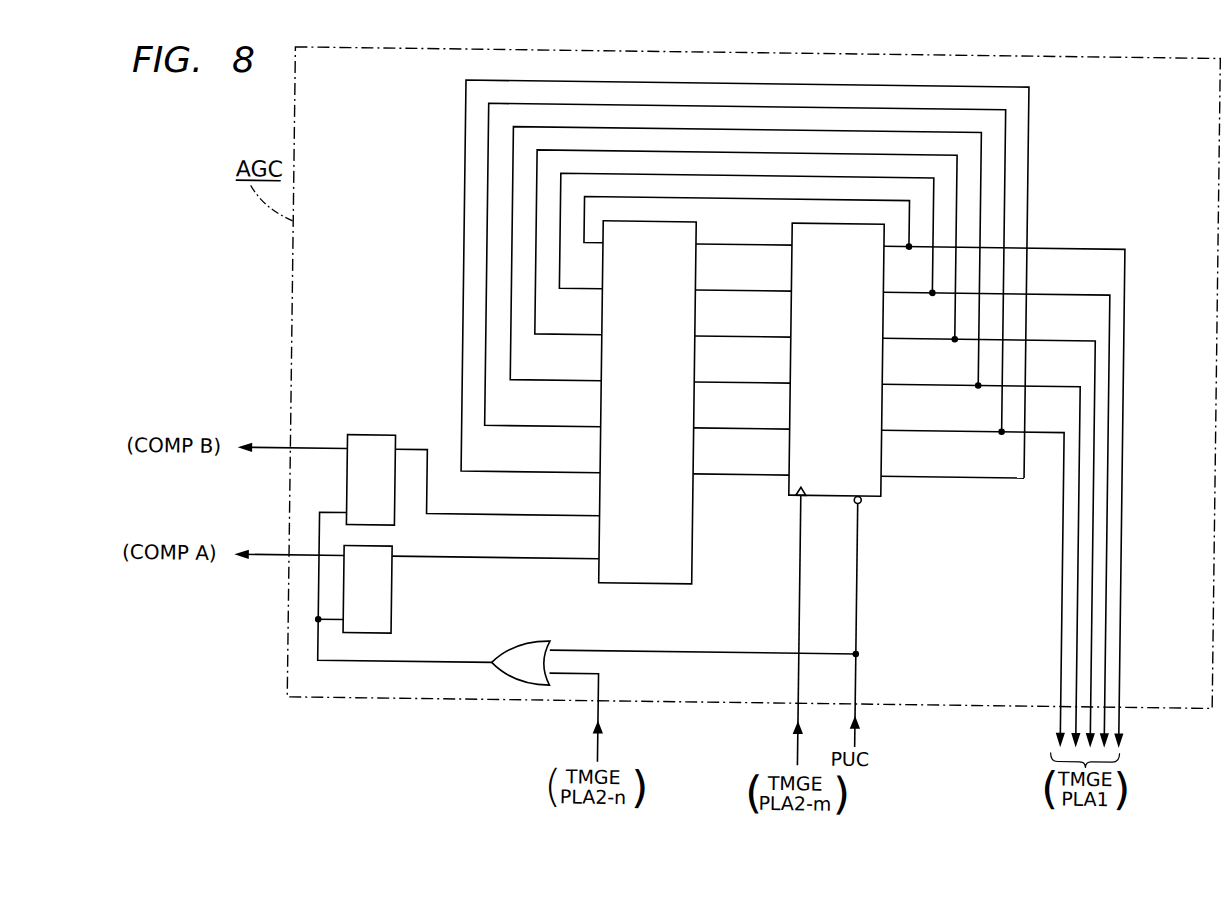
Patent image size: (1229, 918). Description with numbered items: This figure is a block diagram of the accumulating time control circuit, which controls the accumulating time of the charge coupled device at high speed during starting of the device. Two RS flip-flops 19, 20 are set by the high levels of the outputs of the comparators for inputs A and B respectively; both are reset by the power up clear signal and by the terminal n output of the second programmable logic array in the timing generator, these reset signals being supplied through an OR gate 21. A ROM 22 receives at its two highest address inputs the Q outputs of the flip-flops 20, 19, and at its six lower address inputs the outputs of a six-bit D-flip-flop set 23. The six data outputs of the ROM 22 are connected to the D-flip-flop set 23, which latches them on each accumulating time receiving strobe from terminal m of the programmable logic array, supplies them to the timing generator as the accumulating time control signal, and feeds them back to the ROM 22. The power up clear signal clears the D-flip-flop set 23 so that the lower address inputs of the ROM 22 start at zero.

The RS flip-flop 19 is at (388, 608).
The RS flip-flop 20 is at (372, 444).
The OR gate 21 is at (518, 652).
The ROM 22 is at (648, 573).
The D-flip-flop set 23 is at (880, 489).